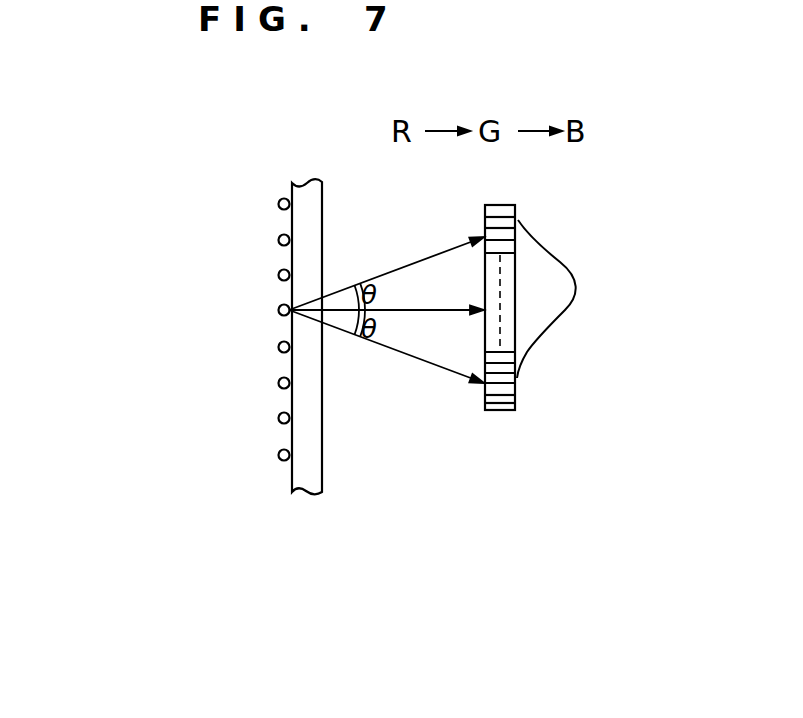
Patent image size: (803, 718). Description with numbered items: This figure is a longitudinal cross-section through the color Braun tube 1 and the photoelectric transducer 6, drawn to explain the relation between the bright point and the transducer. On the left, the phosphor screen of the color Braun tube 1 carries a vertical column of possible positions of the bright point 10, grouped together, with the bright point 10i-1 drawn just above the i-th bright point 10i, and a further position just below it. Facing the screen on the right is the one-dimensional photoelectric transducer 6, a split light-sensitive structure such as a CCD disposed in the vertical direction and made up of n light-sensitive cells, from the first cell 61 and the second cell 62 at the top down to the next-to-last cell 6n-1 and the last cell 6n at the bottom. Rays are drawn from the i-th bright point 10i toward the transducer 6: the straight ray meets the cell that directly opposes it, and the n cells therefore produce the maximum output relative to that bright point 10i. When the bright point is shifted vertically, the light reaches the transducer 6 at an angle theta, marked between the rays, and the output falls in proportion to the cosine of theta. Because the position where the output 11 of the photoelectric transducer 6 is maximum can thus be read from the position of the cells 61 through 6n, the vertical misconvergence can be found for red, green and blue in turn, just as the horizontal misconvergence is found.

The color Braun tube 1 is at (302, 181).
The bright point 10 is at (163, 330).
The bright point 10i-1 is at (279, 276).
The i-th bright point 10i is at (279, 311).
The photoelectric transducer 6 is at (478, 311).
The light-sensitive cell 61 is at (492, 209).
The light-sensitive cell 62 is at (485, 228).
The light-sensitive cell 6n-1 is at (485, 394).
The light-sensitive cell 6n is at (487, 409).
The output of the photoelectric transducer 11 is at (532, 338).